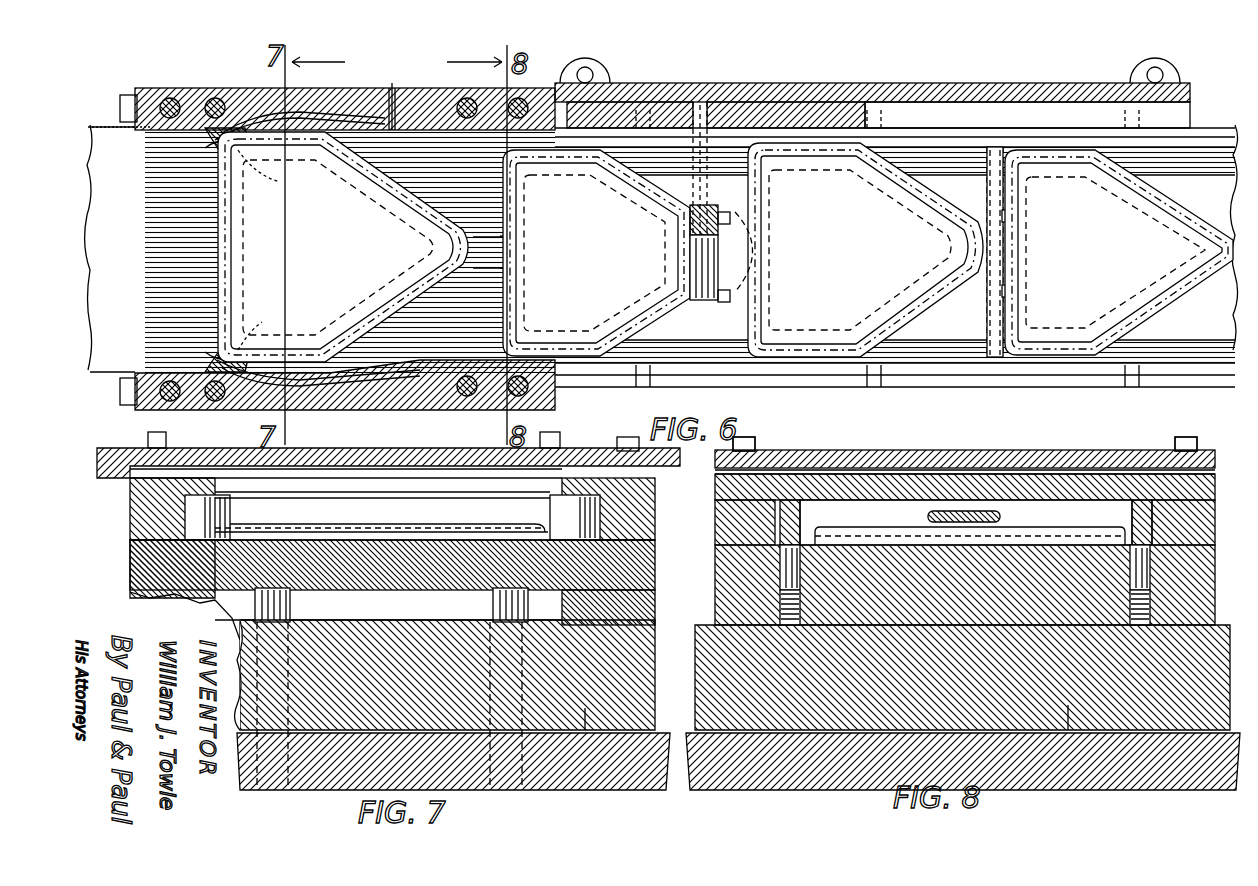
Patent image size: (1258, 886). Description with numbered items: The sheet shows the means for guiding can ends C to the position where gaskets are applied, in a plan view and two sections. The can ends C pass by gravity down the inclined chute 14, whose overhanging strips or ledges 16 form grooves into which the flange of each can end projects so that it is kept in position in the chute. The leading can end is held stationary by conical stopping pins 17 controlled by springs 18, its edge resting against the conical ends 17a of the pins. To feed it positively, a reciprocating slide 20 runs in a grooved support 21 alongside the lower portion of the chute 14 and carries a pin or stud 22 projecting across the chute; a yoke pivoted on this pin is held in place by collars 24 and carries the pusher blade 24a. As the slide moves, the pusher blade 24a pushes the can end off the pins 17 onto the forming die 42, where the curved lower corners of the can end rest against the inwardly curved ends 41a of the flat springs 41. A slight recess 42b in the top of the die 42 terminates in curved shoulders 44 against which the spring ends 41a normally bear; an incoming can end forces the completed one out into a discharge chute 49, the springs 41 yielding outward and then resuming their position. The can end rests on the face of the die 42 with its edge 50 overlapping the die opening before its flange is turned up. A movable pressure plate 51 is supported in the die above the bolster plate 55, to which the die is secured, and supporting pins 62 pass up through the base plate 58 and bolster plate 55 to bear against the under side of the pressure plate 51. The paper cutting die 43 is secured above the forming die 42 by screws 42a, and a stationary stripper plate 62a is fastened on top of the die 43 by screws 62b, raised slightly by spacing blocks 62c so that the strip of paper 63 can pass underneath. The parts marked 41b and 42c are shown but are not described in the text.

In FIG. 6, the chute 14 is at (932, 358).
In FIG. 6, the overhanging strips or ledges 16 is at (896, 375).
In FIG. 6, the conical stopping pins 17 is at (497, 158).
In FIG. 8, the conical stopping pins 17 is at (778, 572).
In FIG. 8, the conical ends of the pins 17a is at (778, 545).
In FIG. 8, the springs 18 is at (778, 600).
In FIG. 6, the reciprocating slide 20 is at (765, 92).
In FIG. 6, the grooved support 21 is at (870, 90).
In FIG. 6, the pin or stud 22 is at (705, 188).
In FIG. 6, the collars 24 is at (690, 212).
In FIG. 6, the pusher blade 24a is at (572, 232).
In FIG. 8, the pusher blade 24a is at (1000, 517).
In FIG. 6, the flat springs 41 is at (355, 362).
In FIG. 7, the flat springs 41 is at (130, 488).
In FIG. 6, the inwardly curved ends of the springs 41a is at (215, 150).
In FIG. 6, the flange wedge 41b is at (262, 118).
In FIG. 6, the forming die 42 is at (150, 222).
In FIG. 7, the forming die 42 is at (135, 565).
In FIG. 8, the forming die 42 is at (1190, 630).
In FIG. 6, the screws 42a is at (212, 98).
In FIG. 7, the recess 42b is at (130, 541).
In FIG. 6, the plate edge 42c is at (210, 133).
In FIG. 6, the paper cutting die 43 is at (540, 410).
In FIG. 7, the paper cutting die 43 is at (128, 516).
In FIG. 8, the paper cutting die 43 is at (1108, 472).
In FIG. 6, the curved shoulders 44 is at (258, 165).
In FIG. 7, the curved shoulders 44 is at (240, 603).
In FIG. 6, the discharge chute 49 is at (125, 355).
In FIG. 6, the edge of the can end 50 is at (212, 276).
In FIG. 7, the edge of the can end 50 is at (230, 530).
In FIG. 7, the movable pressure plate 51 is at (402, 590).
In FIG. 7, the bolster plate 55 is at (585, 730).
In FIG. 8, the bolster plate 55 is at (1068, 730).
In FIG. 7, the base plate 58 is at (590, 765).
In FIG. 8, the base plate 58 is at (757, 772).
In FIG. 7, the supporting pins 62 is at (292, 604).
In FIG. 7, the stationary stripper plate 62a is at (315, 452).
In FIG. 8, the stationary stripper plate 62a is at (885, 458).
In FIG. 6, the screws 62b is at (168, 98).
In FIG. 8, the screws 62b is at (1198, 440).
In FIG. 8, the spacing blocks 62c is at (990, 470).
In FIG. 7, the strip of paper 63 is at (522, 470).
In FIG. 6, the can ends C is at (400, 312).
In FIG. 7, the can ends C is at (410, 522).
In FIG. 8, the can ends C is at (860, 527).